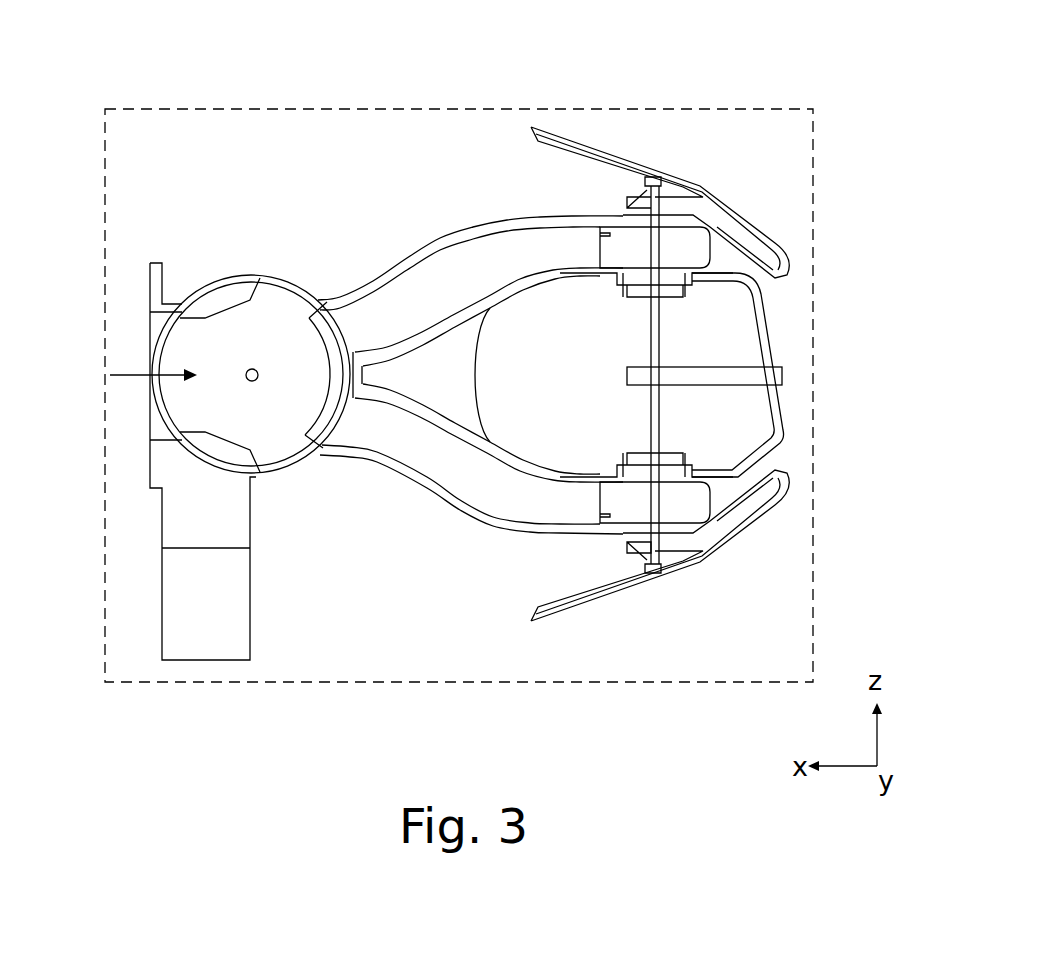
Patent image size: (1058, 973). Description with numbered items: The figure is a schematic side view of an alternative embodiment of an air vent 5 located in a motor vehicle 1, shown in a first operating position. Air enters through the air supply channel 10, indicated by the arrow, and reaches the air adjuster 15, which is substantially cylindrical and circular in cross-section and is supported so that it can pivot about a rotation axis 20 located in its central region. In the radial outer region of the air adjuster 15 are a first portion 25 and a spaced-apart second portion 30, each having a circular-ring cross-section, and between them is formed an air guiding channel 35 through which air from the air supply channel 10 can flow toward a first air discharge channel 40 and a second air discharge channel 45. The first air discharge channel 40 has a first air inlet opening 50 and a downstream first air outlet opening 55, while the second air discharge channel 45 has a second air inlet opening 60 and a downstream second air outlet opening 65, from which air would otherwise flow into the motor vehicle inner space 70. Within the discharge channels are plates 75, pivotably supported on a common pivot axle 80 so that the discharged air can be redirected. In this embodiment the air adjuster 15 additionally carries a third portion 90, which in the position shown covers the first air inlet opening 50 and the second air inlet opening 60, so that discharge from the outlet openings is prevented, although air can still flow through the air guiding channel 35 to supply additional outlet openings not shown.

The motor vehicle 1 is at (146, 656).
The air vent 5 is at (138, 545).
The air supply channel 10 is at (160, 390).
The air adjuster 15 is at (193, 417).
The rotation axis 20 is at (246, 374).
The first portion 25 is at (210, 302).
The second portion 30 is at (205, 448).
The air guiding channel 35 is at (282, 373).
The first air discharge channel 40 is at (455, 290).
The second air discharge channel 45 is at (500, 475).
The first air inlet opening 50 is at (358, 345).
The first air outlet opening 55 is at (760, 258).
The second air inlet opening 60 is at (360, 425).
The second air outlet opening 65 is at (720, 498).
The motor vehicle inner space 70 is at (809, 341).
The plates 75 is at (665, 240).
The common pivot axle 80 is at (663, 423).
The third portion 90 is at (322, 430).